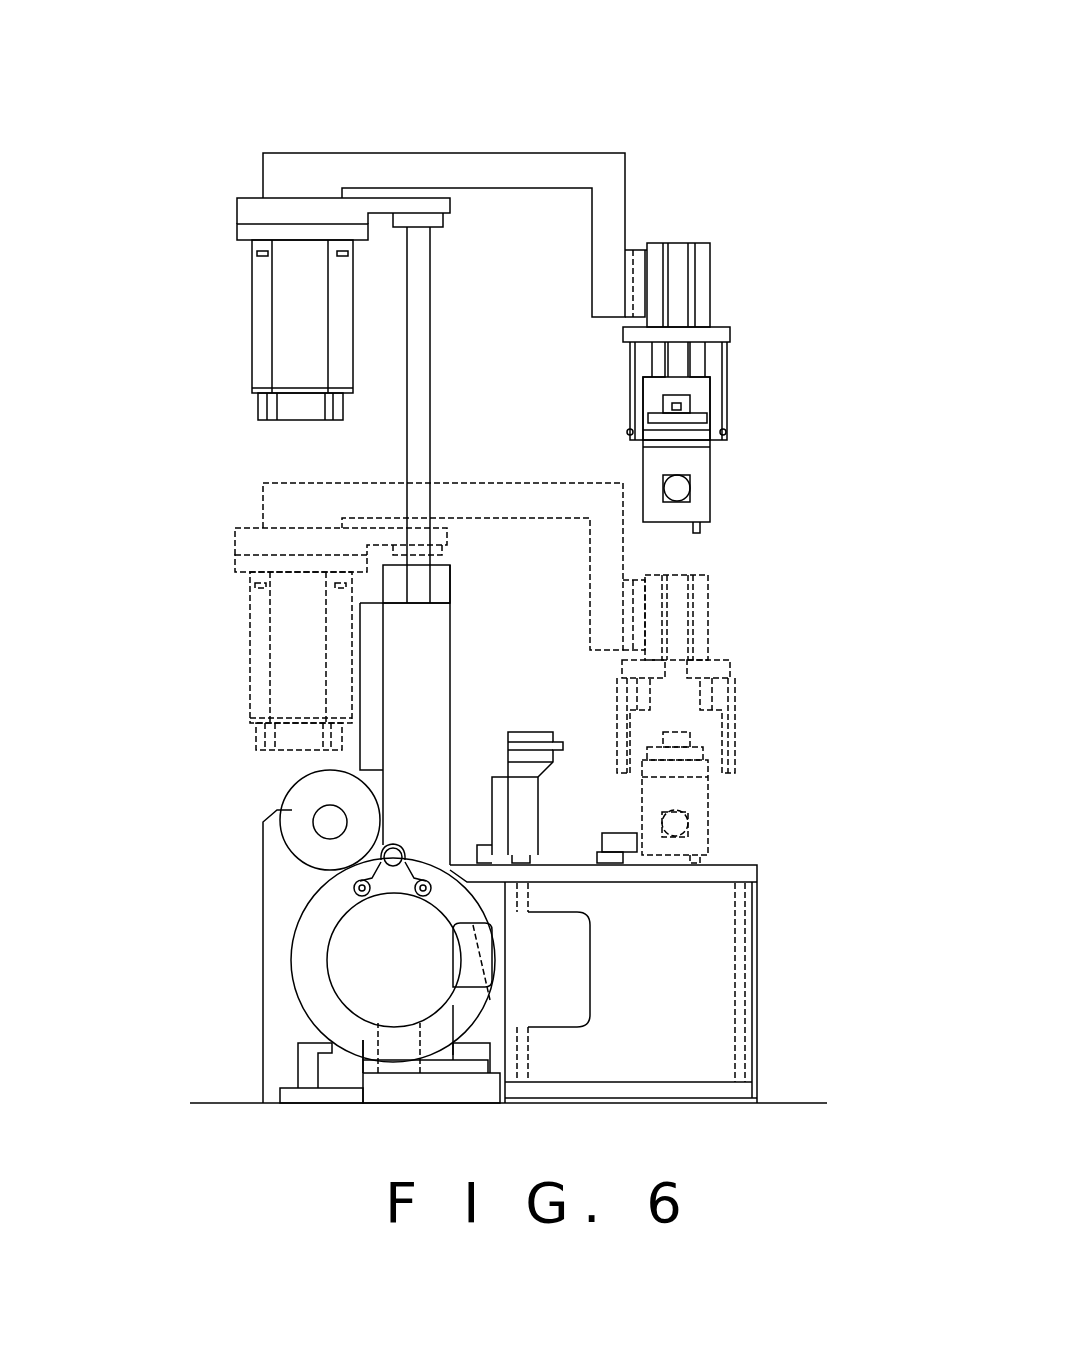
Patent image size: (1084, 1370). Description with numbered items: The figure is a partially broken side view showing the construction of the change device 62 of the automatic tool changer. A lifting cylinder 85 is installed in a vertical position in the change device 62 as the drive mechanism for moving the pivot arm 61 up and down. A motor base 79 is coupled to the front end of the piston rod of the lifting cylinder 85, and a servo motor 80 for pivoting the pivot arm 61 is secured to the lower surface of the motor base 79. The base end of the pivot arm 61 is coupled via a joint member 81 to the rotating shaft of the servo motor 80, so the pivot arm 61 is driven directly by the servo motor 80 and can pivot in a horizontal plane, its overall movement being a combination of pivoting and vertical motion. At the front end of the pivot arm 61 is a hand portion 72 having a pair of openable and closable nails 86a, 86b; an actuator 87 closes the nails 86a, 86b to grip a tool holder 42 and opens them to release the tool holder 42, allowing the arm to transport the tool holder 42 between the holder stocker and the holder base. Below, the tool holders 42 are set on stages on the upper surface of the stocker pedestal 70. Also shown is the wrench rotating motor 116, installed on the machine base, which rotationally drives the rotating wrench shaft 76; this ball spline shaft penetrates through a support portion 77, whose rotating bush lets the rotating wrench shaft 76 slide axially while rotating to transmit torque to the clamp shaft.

The change device 62 is at (557, 113).
The pivot arm 61 is at (475, 170).
The joint member 81 is at (248, 215).
The motor base 79 is at (238, 233).
The servo motor 80 is at (287, 330).
The lifting cylinder 85 is at (428, 642).
The hand portion 72 is at (722, 317).
The actuator 87 is at (697, 250).
The nail 86a is at (637, 363).
The nail 86b is at (715, 363).
The tool holder 42 is at (697, 467).
The stocker pedestal 70 is at (723, 873).
The support portion 77 is at (305, 795).
The rotating wrench shaft 76 is at (328, 825).
The wrench rotating motor 116 is at (305, 968).